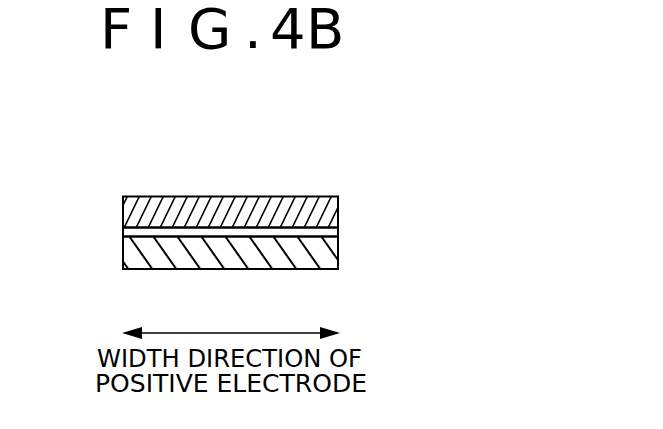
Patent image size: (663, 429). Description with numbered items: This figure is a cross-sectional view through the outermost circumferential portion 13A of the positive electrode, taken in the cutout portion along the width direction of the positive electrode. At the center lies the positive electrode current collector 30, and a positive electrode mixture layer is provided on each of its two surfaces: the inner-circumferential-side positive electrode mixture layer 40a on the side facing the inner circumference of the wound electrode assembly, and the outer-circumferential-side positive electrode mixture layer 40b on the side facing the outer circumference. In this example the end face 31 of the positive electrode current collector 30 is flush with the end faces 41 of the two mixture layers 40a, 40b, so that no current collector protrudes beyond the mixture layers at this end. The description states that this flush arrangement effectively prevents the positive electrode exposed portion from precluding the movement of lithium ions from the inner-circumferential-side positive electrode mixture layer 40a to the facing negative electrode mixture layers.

The outermost circumferential portion 13A is at (425, 192).
The positive electrode current collector 30 is at (338, 231).
The end face 31 is at (122, 237).
The inner-circumferential-side positive electrode mixture layer 40a is at (335, 212).
The outer-circumferential-side positive electrode mixture layer 40b is at (335, 251).
The end faces 41 is at (123, 208).